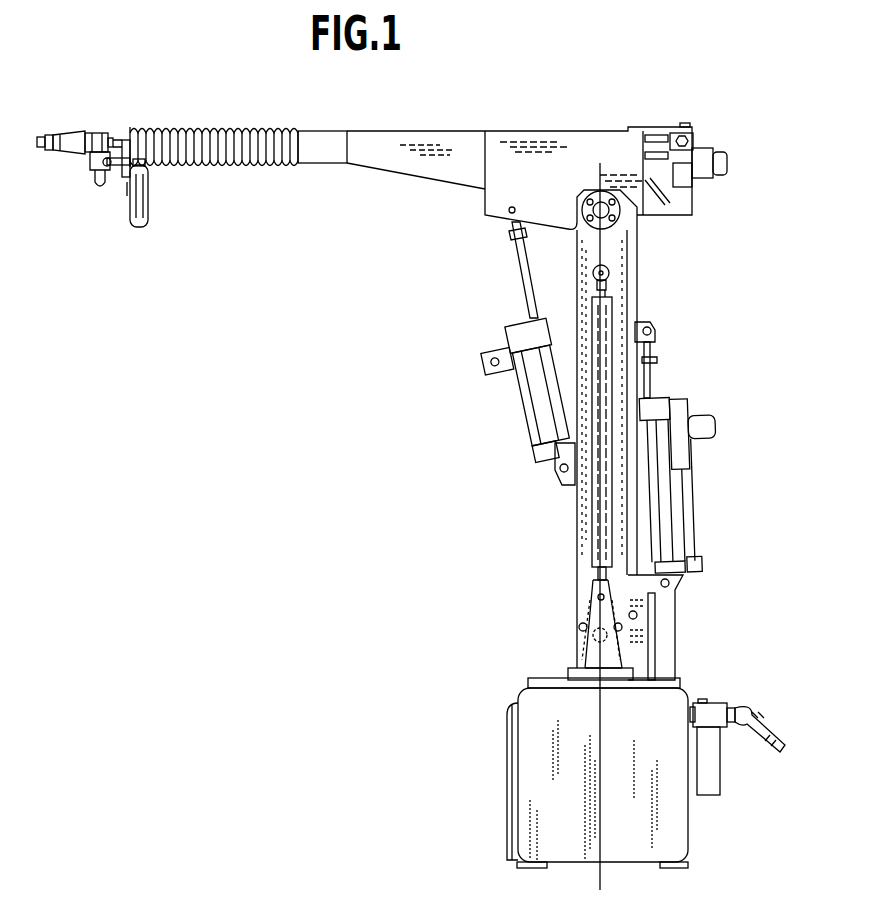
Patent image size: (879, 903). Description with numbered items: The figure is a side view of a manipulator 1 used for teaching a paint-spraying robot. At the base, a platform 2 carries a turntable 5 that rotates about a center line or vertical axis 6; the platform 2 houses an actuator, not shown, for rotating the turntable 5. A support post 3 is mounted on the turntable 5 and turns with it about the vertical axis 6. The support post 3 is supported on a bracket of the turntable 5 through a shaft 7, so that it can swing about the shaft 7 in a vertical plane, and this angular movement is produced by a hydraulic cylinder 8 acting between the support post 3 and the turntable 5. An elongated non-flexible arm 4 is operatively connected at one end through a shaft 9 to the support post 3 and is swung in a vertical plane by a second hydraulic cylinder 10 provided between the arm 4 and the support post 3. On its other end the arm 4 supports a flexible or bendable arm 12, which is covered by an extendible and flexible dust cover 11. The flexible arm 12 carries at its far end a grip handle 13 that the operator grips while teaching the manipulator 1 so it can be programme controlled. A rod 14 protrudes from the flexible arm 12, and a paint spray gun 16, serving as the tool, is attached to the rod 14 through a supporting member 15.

The manipulator 1 is at (456, 494).
The platform 2 is at (535, 750).
The support post 3 is at (597, 278).
The elongated non-flexible arm 4 is at (385, 157).
The turntable 5 is at (682, 680).
The vertical axis 6 is at (603, 745).
The shaft 7 is at (580, 630).
The hydraulic cylinder 8 is at (663, 527).
The shaft 9 is at (597, 215).
The hydraulic cylinder 10 is at (547, 368).
The dust cover 11 is at (193, 162).
The flexible arm 12 is at (197, 140).
The grip handle 13 is at (139, 225).
The rod 14 is at (129, 140).
The supporting member 15 is at (115, 170).
The paint spray gun 16 is at (72, 155).